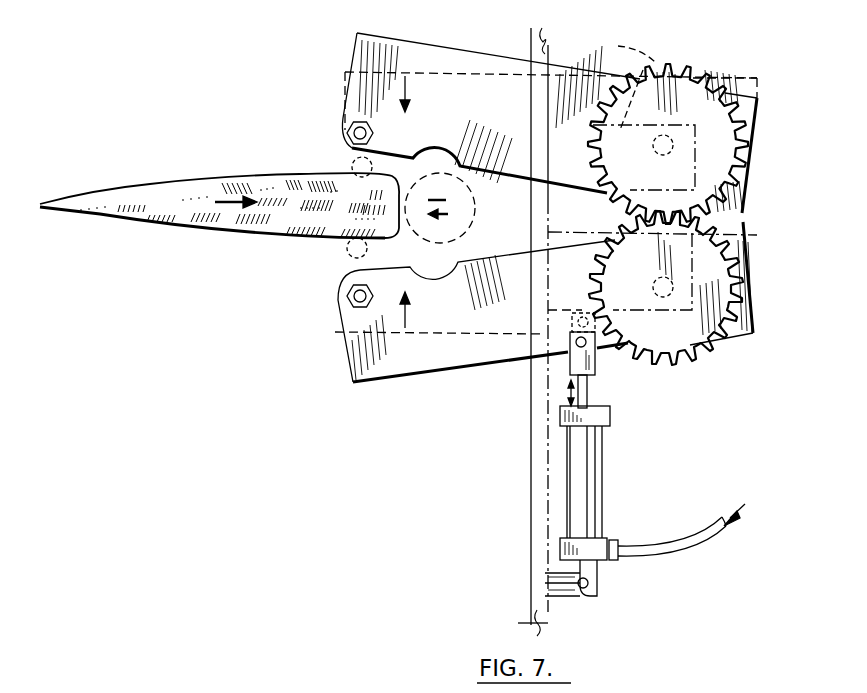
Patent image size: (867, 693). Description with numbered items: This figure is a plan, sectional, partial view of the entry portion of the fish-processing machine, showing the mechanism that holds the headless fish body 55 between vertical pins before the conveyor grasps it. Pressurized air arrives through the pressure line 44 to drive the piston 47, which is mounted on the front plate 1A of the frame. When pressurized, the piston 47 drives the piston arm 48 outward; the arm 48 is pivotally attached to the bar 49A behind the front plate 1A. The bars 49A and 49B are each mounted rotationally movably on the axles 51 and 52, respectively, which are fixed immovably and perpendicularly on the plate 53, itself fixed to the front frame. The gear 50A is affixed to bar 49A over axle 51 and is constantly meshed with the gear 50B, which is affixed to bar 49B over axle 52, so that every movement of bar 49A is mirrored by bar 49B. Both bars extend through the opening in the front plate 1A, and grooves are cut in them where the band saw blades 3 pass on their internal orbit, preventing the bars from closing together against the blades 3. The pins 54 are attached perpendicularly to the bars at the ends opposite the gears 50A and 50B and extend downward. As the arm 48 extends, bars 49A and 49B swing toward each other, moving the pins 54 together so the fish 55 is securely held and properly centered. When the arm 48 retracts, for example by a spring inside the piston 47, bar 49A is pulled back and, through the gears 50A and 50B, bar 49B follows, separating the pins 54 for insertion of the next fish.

The front plate 1A is at (540, 504).
The band saw blades 3 is at (437, 198).
The pressure line 44 is at (690, 536).
The piston 47 is at (595, 475).
The piston arm 48 is at (587, 386).
The bar 49A is at (437, 352).
The bar 49B is at (437, 62).
The gear 50A is at (700, 342).
The gear 50B is at (704, 100).
The axle 51 is at (656, 280).
The axle 52 is at (750, 143).
The plate 53 is at (620, 81).
The pins 54 is at (347, 133).
The fish 55 is at (255, 232).